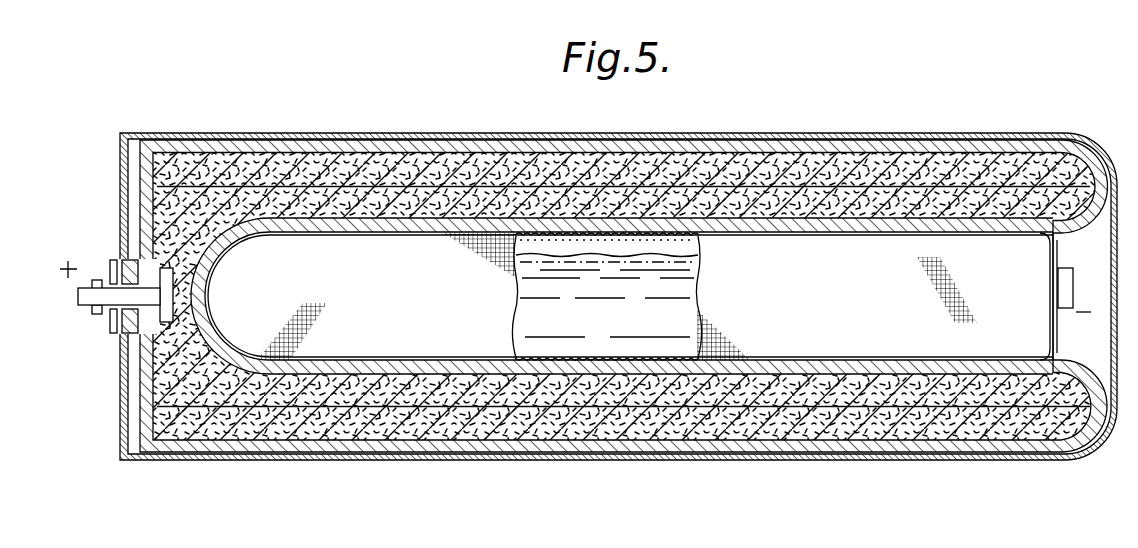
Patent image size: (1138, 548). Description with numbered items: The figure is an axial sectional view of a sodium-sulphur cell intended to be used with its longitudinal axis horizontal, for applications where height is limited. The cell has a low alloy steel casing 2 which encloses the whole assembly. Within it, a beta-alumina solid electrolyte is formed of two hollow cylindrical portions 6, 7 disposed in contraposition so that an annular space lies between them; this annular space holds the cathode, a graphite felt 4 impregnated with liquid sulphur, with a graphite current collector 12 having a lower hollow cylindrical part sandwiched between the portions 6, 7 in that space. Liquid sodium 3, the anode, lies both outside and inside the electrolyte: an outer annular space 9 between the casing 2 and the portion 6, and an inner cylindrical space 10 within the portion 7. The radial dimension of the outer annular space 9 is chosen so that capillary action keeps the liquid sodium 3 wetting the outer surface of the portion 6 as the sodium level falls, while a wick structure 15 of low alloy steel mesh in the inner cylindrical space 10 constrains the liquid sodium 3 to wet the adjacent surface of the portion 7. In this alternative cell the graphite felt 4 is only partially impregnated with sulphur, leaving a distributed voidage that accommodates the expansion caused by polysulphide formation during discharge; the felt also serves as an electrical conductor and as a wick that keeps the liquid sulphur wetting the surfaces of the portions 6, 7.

The casing 2 is at (613, 460).
The liquid sodium 3 is at (687, 285).
The graphite felt 4 is at (881, 195).
The hollow cylindrical portion 6 is at (478, 145).
The hollow cylindrical portion 7 is at (431, 223).
The outer annular space 9 is at (283, 134).
The inner cylindrical space 10 is at (682, 331).
The current collector 12 is at (443, 406).
The wick structure 15 is at (550, 238).